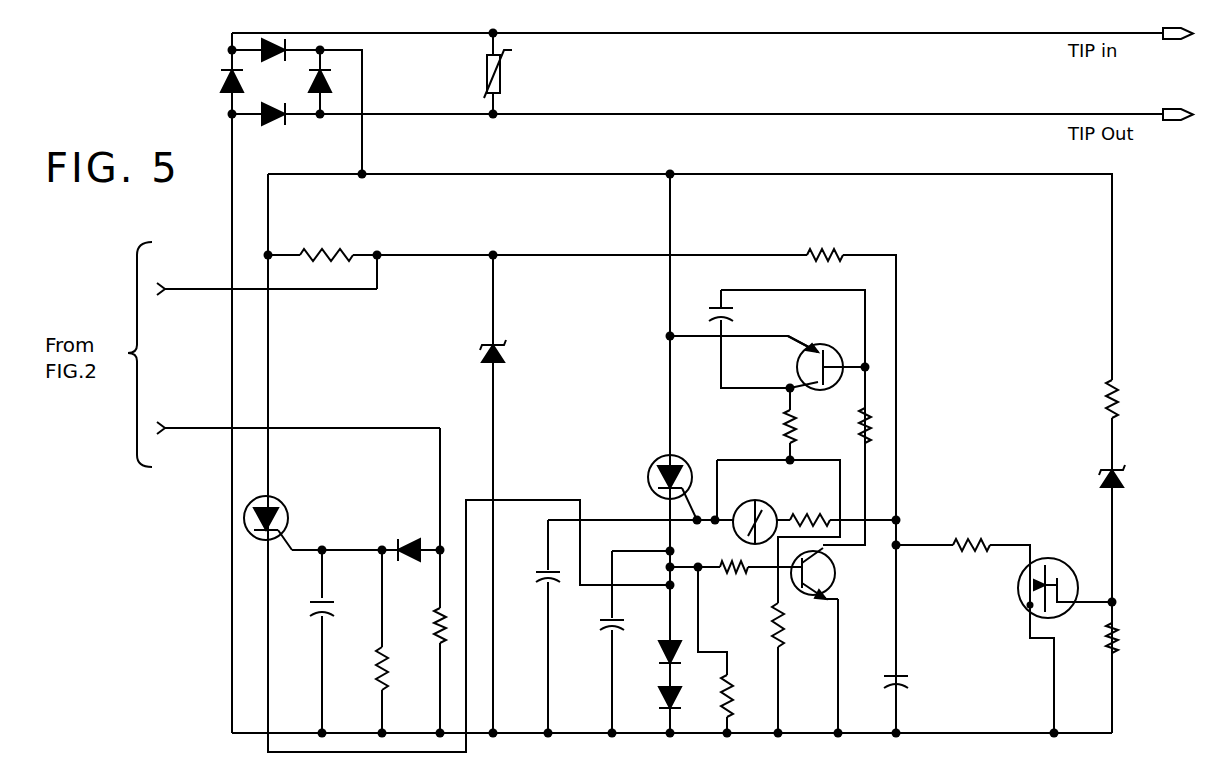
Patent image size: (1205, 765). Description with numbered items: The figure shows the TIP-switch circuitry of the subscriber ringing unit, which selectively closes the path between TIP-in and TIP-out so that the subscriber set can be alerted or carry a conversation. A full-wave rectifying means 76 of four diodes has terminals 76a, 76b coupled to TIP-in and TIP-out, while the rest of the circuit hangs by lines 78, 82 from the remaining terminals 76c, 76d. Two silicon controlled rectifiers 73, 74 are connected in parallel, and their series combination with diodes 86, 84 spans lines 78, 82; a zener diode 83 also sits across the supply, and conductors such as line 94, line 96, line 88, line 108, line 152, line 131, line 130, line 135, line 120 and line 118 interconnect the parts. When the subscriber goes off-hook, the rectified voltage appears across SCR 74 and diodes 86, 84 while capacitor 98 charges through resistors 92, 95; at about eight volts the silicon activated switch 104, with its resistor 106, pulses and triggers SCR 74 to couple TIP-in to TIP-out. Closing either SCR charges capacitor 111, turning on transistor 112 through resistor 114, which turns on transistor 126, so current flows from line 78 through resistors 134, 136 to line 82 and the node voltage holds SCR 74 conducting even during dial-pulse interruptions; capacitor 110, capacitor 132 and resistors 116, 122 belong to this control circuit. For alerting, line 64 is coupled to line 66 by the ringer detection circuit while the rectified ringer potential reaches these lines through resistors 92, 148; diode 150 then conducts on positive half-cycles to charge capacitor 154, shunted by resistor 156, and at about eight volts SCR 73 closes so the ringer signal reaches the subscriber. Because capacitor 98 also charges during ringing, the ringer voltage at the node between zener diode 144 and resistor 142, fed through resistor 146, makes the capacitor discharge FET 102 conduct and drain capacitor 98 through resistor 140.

The full-wave rectifying means 76 is at (255, 81).
The terminal 76a is at (232, 50).
The terminal 76b is at (320, 114).
The terminal 76c is at (320, 50).
The terminal 76d is at (232, 114).
The line 78 is at (410, 174).
The line 82 is at (232, 195).
The resistor 92 is at (320, 250).
The line 94 is at (540, 255).
The resistor 95 is at (808, 250).
The line 96 is at (896, 340).
The line 64 is at (212, 289).
The line 66 is at (187, 428).
The zener diode 83 is at (504, 352).
The silicon controlled rectifier 73 is at (280, 502).
The line 152 is at (357, 550).
The diode 150 is at (408, 561).
The capacitor 154 is at (310, 607).
The resistor 148 is at (434, 638).
The resistor 156 is at (376, 672).
The line 88 is at (408, 752).
The capacitor 110 is at (536, 575).
The capacitor 111 is at (600, 624).
The diode 86 is at (658, 648).
The diode 84 is at (658, 696).
The silicon controlled rectifier 74 is at (652, 462).
The line 108 is at (717, 468).
The capacitor 132 is at (709, 312).
The line 131 is at (865, 314).
The transistor 126 is at (797, 366).
The line 130 is at (728, 388).
The resistor 134 is at (784, 432).
The line 135 is at (840, 460).
The silicon activated switch 104 is at (776, 505).
The resistor 106 is at (815, 514).
The resistor 122 is at (871, 415).
The line 120 is at (865, 483).
The resistor 114 is at (733, 573).
The resistor 116 is at (738, 695).
The resistor 136 is at (784, 622).
The transistor 112 is at (836, 572).
The line 118 is at (838, 655).
The capacitor 98 is at (908, 680).
The resistor 146 is at (1118, 398).
The zener diode 144 is at (1124, 484).
The capacitor discharge FET 102 is at (1062, 558).
The resistor 140 is at (970, 551).
The resistor 142 is at (1118, 655).